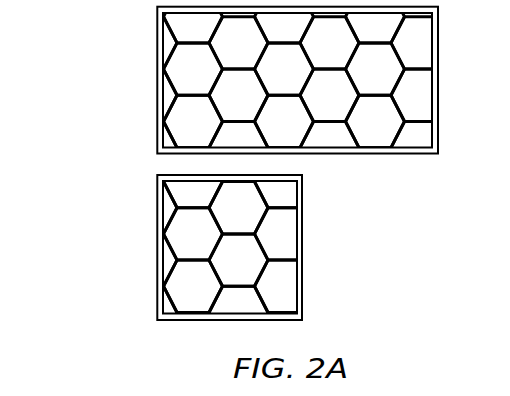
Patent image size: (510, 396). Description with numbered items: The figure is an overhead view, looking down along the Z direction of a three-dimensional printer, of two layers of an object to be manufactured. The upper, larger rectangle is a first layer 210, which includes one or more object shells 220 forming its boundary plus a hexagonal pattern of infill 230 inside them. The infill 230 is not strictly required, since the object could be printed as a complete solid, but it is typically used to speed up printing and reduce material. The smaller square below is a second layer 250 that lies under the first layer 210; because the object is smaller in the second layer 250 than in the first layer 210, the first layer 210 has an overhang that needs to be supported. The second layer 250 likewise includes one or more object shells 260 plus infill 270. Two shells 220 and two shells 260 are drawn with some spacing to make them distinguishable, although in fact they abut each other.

The first layer 210 is at (134, 77).
The object shells 220 is at (383, 156).
The infill 230 is at (418, 94).
The second layer 250 is at (134, 240).
The object shells 260 is at (302, 292).
The infill 270 is at (285, 235).